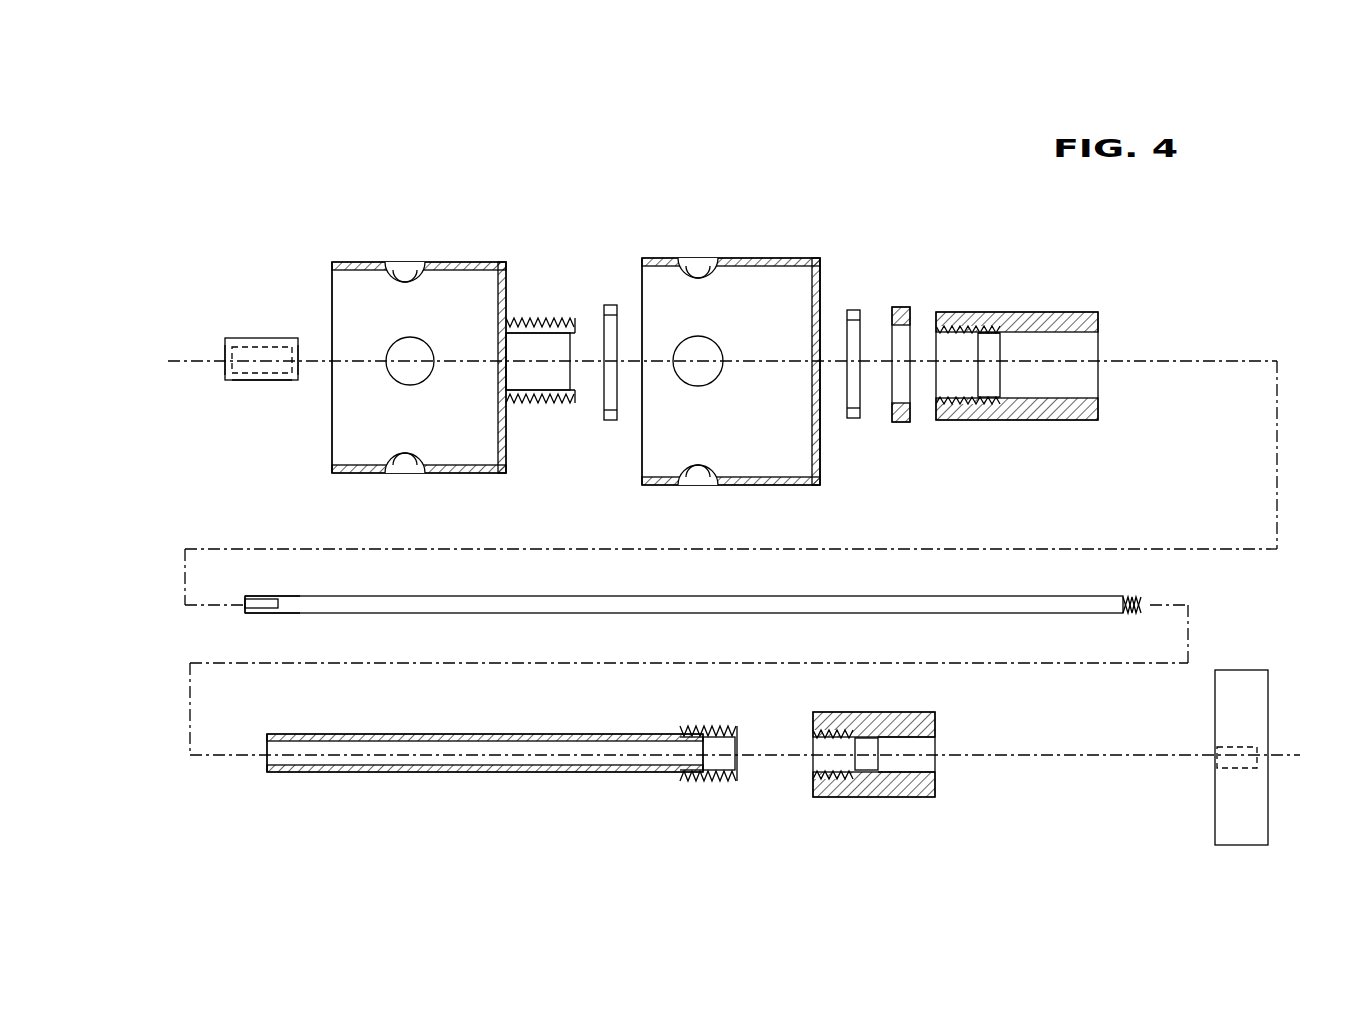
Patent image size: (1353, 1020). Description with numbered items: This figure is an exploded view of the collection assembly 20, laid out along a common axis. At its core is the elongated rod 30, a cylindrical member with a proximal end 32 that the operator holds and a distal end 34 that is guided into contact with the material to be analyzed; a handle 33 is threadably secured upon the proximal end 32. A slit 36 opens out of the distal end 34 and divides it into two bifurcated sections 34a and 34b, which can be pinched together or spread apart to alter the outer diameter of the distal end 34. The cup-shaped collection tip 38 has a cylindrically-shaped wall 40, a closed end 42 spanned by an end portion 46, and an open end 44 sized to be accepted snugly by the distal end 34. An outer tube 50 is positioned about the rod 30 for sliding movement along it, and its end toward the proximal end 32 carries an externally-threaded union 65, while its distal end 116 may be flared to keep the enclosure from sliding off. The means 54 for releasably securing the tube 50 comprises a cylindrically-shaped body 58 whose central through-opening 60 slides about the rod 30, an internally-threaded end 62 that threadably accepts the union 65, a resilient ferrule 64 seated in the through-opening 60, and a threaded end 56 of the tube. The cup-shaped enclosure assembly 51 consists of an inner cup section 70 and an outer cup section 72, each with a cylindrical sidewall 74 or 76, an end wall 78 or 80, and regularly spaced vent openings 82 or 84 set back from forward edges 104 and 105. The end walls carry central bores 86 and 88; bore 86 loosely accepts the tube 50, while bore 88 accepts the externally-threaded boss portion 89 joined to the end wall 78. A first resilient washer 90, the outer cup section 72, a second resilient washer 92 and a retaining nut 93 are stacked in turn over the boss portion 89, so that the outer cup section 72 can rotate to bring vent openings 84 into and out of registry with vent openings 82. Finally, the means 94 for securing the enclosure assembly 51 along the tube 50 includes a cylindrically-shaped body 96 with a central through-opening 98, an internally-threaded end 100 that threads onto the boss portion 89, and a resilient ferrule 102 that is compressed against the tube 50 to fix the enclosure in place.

The collection assembly 20 is at (288, 257).
The elongated rod 30 is at (680, 579).
The proximal end 32 is at (1142, 604).
The handle 33 is at (1269, 708).
The distal end 34 is at (246, 612).
The bifurcated section 34a is at (252, 614).
The bifurcated section 34b is at (245, 597).
The slit 36 is at (268, 600).
The collection tip 38 is at (232, 340).
The cylindrically-shaped wall 40 is at (262, 382).
The closed end 42 is at (226, 372).
The open end 44 is at (305, 348).
The end portion 46 is at (225, 355).
The outer tube 50 is at (500, 757).
The enclosure assembly 51 is at (410, 363).
The means for releasably securing 54 is at (897, 759).
The threaded tube end 56 is at (718, 728).
The cylindrically-shaped body 58 is at (875, 713).
The central through-opening 60 is at (900, 760).
The internally-threaded end 62 is at (814, 772).
The resilient ferrule 64 is at (880, 750).
The externally-threaded union 65 is at (692, 780).
The inner cup section 70 is at (496, 262).
The outer cup section 72 is at (727, 370).
The cylindrical sidewall 74 is at (455, 474).
The cylindrical sidewall 76 is at (760, 486).
The end wall 78 is at (507, 440).
The end wall 80 is at (821, 448).
The vent openings 82 is at (400, 262).
The vent openings 84 is at (693, 258).
The central bore 86 is at (535, 392).
The central bore 88 is at (821, 392).
The externally-threaded boss portion 89 is at (532, 320).
The first resilient washer 90 is at (611, 304).
The second resilient washer 92 is at (858, 309).
The retaining nut 93 is at (911, 318).
The means for releasably securing 94 is at (1041, 360).
The cylindrically-shaped body 96 is at (1068, 418).
The central through-opening 98 is at (1000, 338).
The internally-threaded end 100 is at (940, 405).
The resilient ferrule 102 is at (1000, 398).
The forward edge 104 is at (331, 448).
The forward edge 105 is at (641, 452).
The distal end 116 is at (268, 735).